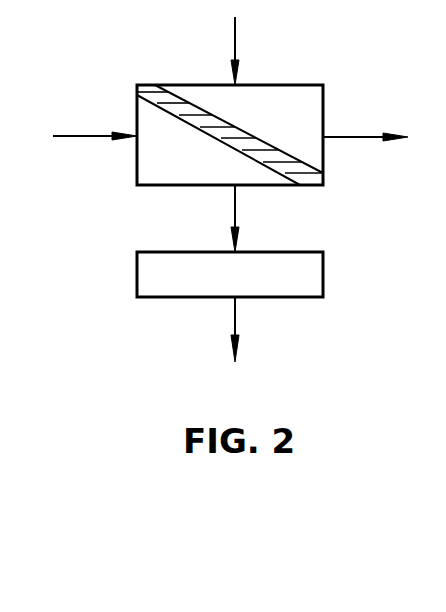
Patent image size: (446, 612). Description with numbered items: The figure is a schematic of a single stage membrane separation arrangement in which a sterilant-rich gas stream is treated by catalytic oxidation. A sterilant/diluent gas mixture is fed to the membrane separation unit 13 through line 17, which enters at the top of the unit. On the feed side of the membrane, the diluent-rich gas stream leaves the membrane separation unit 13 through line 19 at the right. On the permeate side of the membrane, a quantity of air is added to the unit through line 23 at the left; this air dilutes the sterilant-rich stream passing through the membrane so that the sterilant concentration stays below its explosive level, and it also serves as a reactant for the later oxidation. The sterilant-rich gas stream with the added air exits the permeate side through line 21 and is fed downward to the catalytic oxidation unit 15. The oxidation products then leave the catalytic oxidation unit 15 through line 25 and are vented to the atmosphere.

The membrane separation unit 13 is at (283, 85).
The catalytic oxidation unit 15 is at (283, 252).
The line 17 is at (233, 45).
The line 19 is at (350, 137).
The line 21 is at (233, 213).
The line 23 is at (82, 136).
The line 25 is at (233, 323).